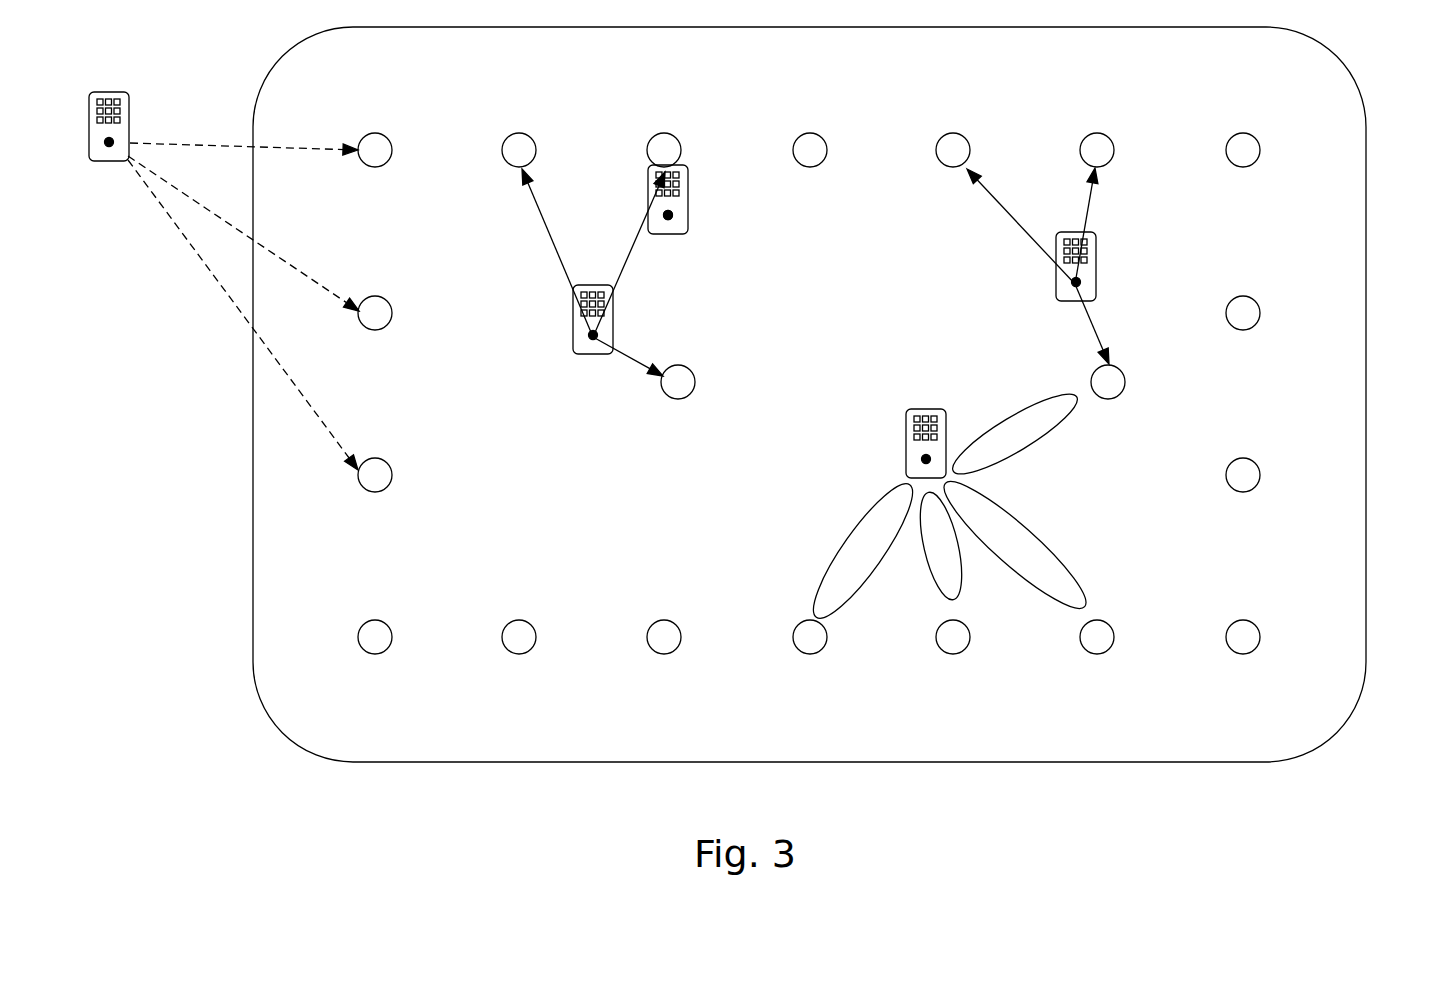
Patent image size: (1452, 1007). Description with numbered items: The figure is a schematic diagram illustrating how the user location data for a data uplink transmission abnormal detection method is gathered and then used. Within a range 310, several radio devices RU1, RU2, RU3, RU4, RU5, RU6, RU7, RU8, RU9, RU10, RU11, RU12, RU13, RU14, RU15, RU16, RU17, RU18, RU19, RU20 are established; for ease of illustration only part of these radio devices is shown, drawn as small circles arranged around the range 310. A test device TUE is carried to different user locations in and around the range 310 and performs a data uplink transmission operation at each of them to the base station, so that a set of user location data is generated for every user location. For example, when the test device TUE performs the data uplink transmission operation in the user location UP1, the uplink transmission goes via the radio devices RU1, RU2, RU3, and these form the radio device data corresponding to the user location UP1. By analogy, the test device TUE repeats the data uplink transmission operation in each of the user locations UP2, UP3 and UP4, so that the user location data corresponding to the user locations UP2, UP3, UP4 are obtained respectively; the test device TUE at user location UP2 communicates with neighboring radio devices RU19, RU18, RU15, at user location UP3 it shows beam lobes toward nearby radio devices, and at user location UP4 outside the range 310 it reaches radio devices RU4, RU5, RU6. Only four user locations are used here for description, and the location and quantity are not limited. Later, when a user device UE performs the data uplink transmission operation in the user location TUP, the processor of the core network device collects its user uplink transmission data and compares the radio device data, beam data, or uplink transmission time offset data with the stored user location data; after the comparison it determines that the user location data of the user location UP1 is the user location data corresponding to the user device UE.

The range 310 is at (1366, 205).
The radio device RU1 is at (678, 406).
The radio device RU2 is at (664, 127).
The radio device RU3 is at (519, 127).
The radio device RU4 is at (375, 127).
The radio device RU5 is at (375, 290).
The radio device RU6 is at (375, 502).
The radio device RU7 is at (375, 664).
The radio device RU8 is at (519, 664).
The radio device RU9 is at (664, 664).
The radio device RU10 is at (810, 664).
The radio device RU11 is at (953, 664).
The radio device RU12 is at (1097, 664).
The radio device RU13 is at (1243, 664).
The radio device RU14 is at (1243, 502).
The radio device RU15 is at (1113, 406).
The radio device RU16 is at (1243, 290).
The radio device RU17 is at (1243, 127).
The radio device RU18 is at (1097, 127).
The radio device RU19 is at (953, 127).
The radio device RU20 is at (810, 127).
The user device UE is at (688, 200).
The test device TUE is at (630, 360).
The user location TUP is at (668, 221).
The user location UP1 is at (590, 337).
The user location UP2 is at (1056, 285).
The user location UP3 is at (926, 409).
The user location UP4 is at (113, 138).